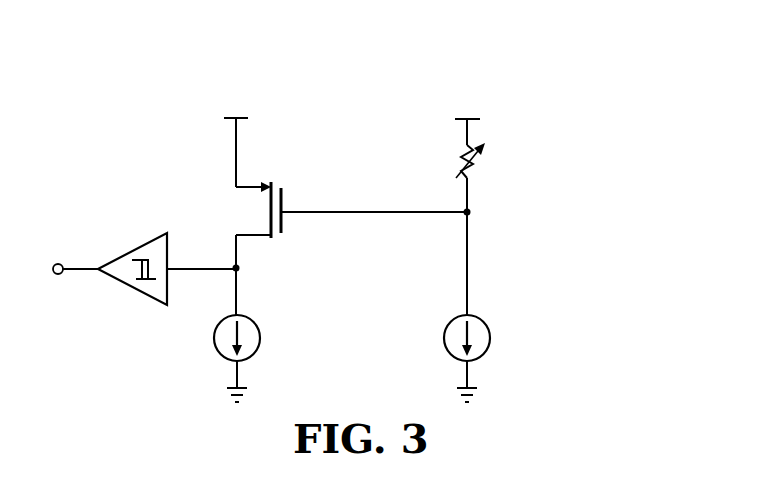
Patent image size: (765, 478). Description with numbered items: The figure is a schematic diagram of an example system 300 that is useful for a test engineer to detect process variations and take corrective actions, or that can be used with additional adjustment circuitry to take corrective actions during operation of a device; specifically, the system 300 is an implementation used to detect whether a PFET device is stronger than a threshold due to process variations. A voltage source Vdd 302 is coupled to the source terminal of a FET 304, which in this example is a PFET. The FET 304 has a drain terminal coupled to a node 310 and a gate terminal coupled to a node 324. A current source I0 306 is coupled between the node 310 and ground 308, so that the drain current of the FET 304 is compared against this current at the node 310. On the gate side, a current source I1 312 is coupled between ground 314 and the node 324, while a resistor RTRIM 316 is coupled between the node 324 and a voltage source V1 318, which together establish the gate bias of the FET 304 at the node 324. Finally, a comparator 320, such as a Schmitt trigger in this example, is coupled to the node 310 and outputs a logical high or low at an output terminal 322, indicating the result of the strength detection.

The system 300 is at (163, 64).
The voltage source Vdd 302 is at (231, 120).
The FET 304 is at (284, 199).
The current source I0 306 is at (213, 339).
The ground 308 is at (223, 394).
The node 310 is at (233, 264).
The current source I1 312 is at (445, 339).
The ground 314 is at (480, 394).
The resistor RTRIM 316 is at (459, 163).
The voltage source V1 318 is at (480, 125).
The comparator 320 is at (134, 252).
The output terminal 322 is at (56, 276).
The node 324 is at (462, 218).